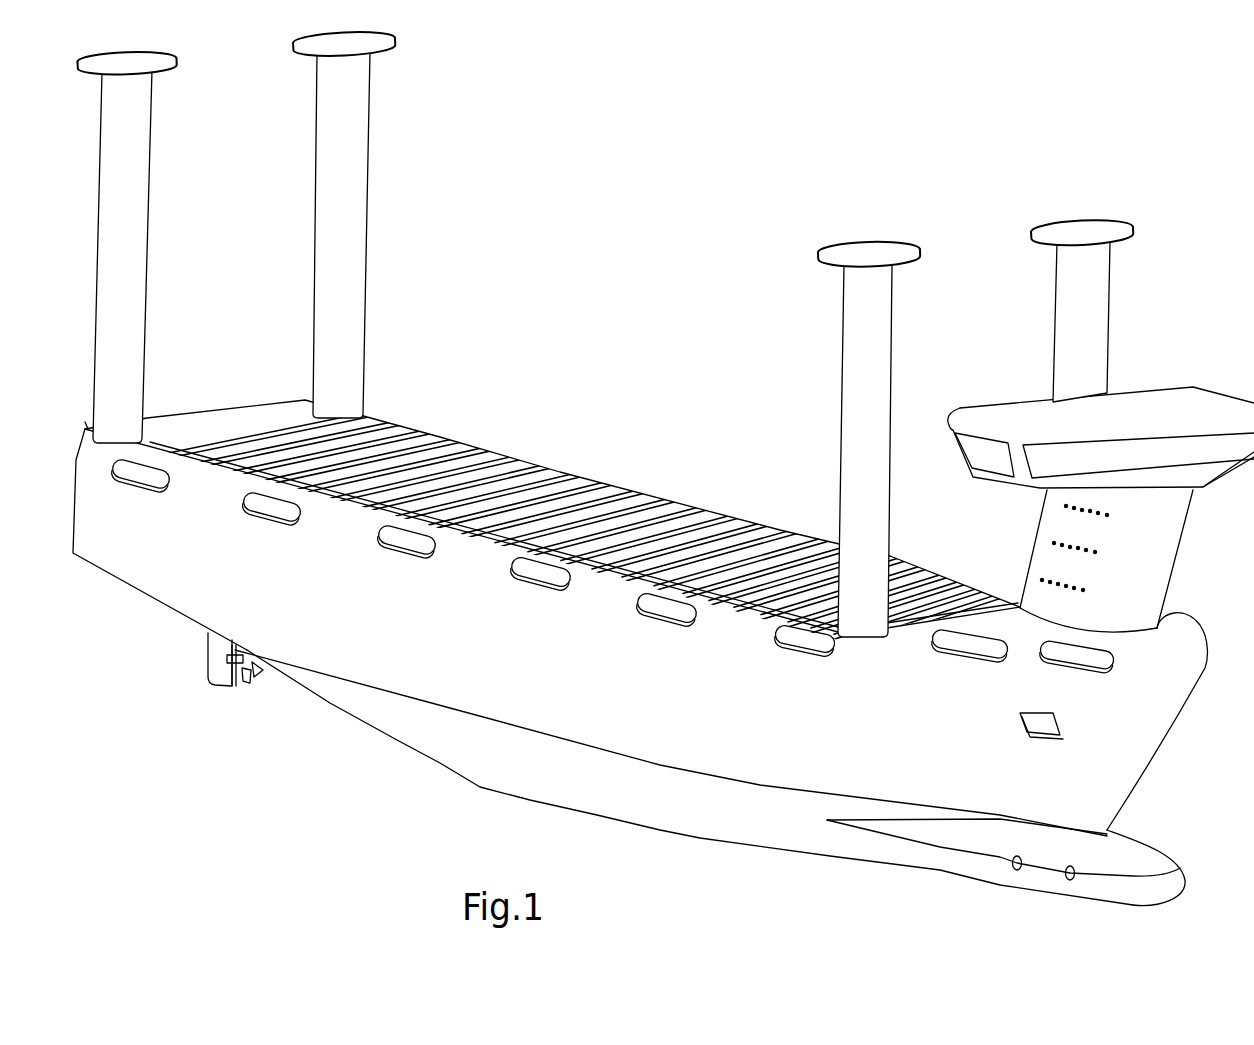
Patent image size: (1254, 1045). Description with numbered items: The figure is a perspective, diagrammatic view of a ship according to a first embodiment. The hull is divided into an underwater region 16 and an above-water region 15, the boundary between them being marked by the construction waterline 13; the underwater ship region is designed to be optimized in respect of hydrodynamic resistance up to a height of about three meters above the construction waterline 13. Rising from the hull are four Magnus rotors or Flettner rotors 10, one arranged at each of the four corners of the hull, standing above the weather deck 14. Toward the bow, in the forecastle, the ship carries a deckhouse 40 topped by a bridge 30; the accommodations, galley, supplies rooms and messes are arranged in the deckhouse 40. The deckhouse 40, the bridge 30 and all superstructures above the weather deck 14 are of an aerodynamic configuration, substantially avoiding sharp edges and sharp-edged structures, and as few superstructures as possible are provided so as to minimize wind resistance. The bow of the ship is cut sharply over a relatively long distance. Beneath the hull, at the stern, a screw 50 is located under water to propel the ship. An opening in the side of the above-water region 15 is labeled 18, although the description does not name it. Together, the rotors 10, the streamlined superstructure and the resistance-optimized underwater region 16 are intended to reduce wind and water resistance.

The Magnus rotors 10 is at (605, 333).
The construction waterline 13 is at (450, 708).
The weather deck 14 is at (543, 497).
The above-water region 15 is at (640, 626).
The underwater region 16 is at (716, 778).
The scupper 18 is at (963, 640).
The bridge 30 is at (1101, 437).
The deckhouse 40 is at (1106, 559).
The screw 50 is at (207, 663).